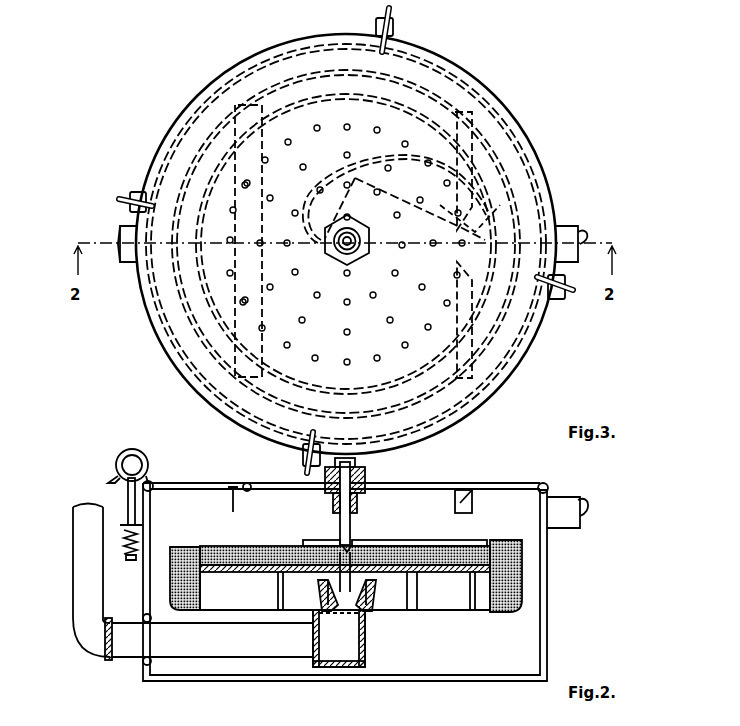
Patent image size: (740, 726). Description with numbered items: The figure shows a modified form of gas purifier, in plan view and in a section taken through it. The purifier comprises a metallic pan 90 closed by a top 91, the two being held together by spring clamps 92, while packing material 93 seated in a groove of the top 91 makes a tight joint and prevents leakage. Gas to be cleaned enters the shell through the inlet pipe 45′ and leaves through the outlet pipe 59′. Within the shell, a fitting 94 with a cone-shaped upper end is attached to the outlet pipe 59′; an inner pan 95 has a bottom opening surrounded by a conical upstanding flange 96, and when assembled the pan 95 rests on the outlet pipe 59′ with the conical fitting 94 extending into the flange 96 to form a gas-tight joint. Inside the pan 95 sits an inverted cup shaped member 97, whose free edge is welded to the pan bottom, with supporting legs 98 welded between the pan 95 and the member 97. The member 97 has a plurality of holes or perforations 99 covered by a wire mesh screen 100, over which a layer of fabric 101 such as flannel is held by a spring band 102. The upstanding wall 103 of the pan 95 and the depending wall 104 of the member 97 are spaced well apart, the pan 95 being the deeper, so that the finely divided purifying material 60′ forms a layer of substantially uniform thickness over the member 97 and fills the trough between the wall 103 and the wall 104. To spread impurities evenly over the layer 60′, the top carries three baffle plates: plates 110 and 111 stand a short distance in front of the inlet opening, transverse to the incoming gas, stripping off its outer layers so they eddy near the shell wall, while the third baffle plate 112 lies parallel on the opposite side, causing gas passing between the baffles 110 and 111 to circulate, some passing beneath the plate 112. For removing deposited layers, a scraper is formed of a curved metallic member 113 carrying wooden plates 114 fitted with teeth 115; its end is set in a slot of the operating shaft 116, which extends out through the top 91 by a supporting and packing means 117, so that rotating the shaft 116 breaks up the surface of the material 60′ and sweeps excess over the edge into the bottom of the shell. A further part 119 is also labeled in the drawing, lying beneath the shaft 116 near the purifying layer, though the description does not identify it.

In FIG. 3, the metallic pan 90 is at (473, 88).
In FIG. 2, the metallic pan 90 is at (548, 608).
In FIG. 2, the top 91 is at (516, 483).
In FIG. 3, the spring clamps 92 is at (394, 15).
In FIG. 2, the spring clamps 92 is at (128, 500).
In FIG. 2, the packing material 93 is at (556, 490).
In FIG. 2, the fitting 94 is at (367, 647).
In FIG. 2, the pan 95 is at (423, 612).
In FIG. 2, the upstanding flange 96 is at (378, 606).
In FIG. 2, the inverted cup shaped member 97 is at (472, 574).
In FIG. 2, the supporting legs 98 is at (282, 597).
In FIG. 3, the holes or perforations 99 is at (403, 143).
In FIG. 2, the holes or perforations 99 is at (345, 578).
In FIG. 2, the screen 100 is at (237, 553).
In FIG. 2, the layer of fabric 101 is at (206, 548).
In FIG. 2, the spring band 102 is at (175, 582).
In FIG. 3, the upstanding wall 103 is at (220, 120).
In FIG. 2, the upstanding wall 103 is at (522, 566).
In FIG. 3, the depending wall 104 is at (207, 292).
In FIG. 2, the depending wall 104 is at (493, 592).
In FIG. 3, the baffle plate 110 is at (455, 137).
In FIG. 2, the baffle plate 110 is at (476, 486).
In FIG. 3, the baffle plate 111 is at (455, 345).
In FIG. 3, the third baffle plate 112 is at (237, 160).
In FIG. 2, the third baffle plate 112 is at (233, 495).
In FIG. 3, the curved metallic member 113 is at (493, 203).
In FIG. 3, the wooden plates 114 is at (330, 193).
In FIG. 2, the teeth 115 is at (425, 547).
In FIG. 2, the operating shaft 116 is at (356, 483).
In FIG. 2, the supporting and packing means 117 is at (328, 490).
In FIG. 2, the plate 119 is at (303, 541).
In FIG. 3, the inlet pipe 45′ is at (563, 233).
In FIG. 2, the inlet pipe 45′ is at (566, 520).
In FIG. 3, the outlet pipe 59′ is at (133, 250).
In FIG. 2, the outlet pipe 59′ is at (128, 643).
In FIG. 2, the purifying material 60′ is at (170, 561).